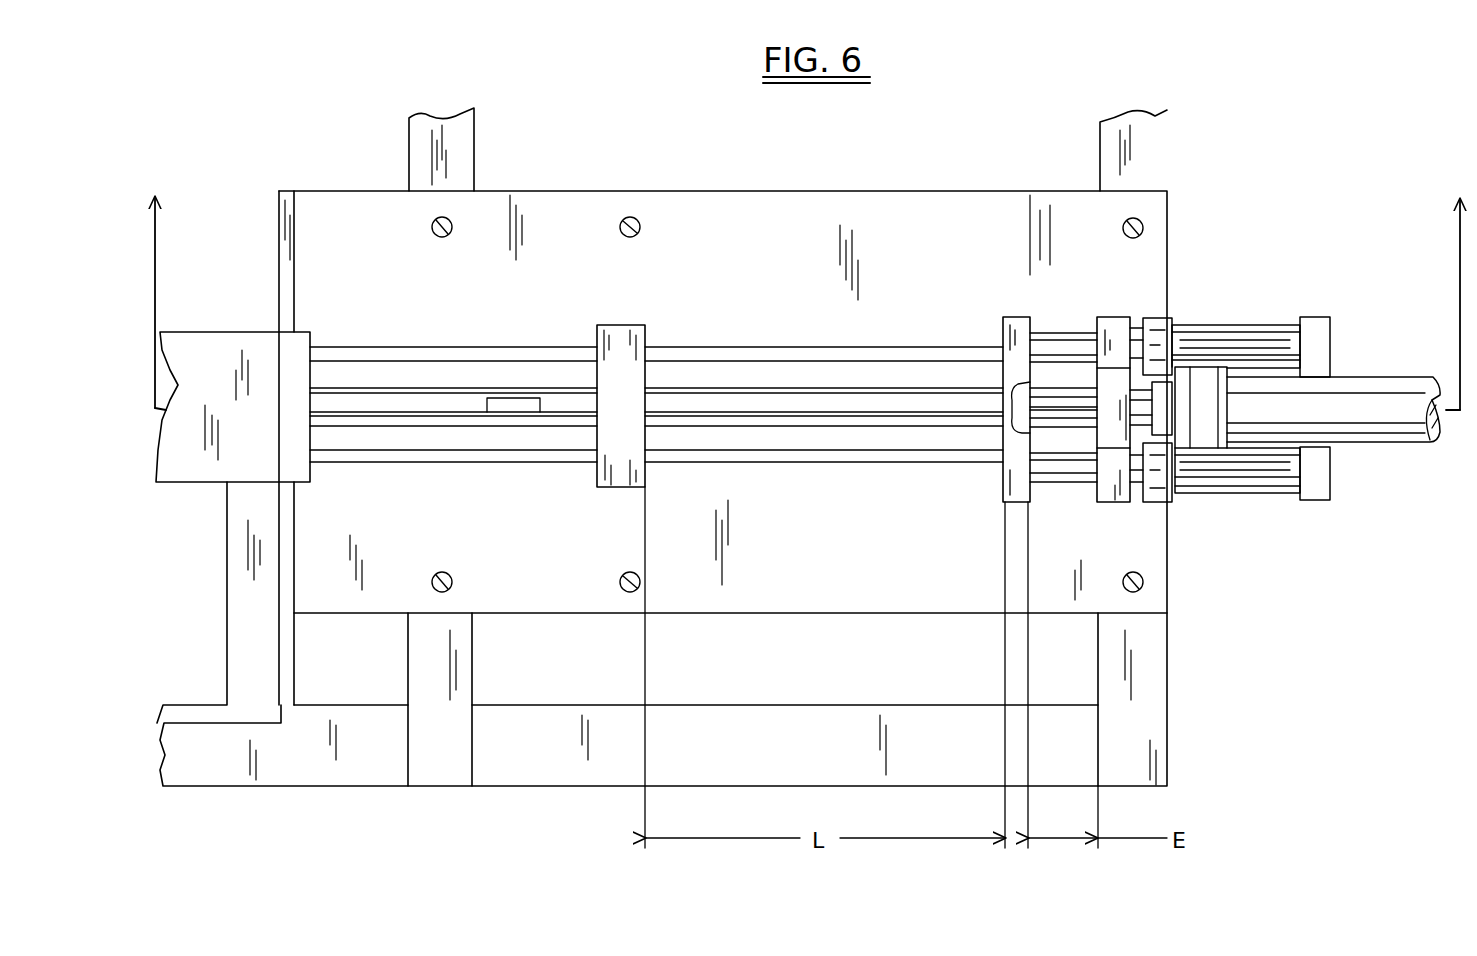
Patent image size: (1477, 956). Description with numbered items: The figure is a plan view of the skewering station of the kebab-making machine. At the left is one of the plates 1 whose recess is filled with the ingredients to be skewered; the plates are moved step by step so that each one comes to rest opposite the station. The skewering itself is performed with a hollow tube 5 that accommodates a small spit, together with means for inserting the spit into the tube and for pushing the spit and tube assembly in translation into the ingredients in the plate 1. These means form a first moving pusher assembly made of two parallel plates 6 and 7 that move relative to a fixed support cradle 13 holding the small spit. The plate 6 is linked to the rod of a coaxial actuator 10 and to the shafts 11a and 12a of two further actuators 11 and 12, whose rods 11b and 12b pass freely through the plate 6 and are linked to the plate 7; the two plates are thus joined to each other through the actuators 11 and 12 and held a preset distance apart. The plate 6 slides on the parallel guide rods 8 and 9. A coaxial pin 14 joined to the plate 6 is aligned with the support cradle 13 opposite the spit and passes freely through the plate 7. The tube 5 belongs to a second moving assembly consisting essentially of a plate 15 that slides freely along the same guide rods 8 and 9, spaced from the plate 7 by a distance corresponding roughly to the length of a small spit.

The plate 1 is at (194, 330).
The hollow tube 5 is at (485, 412).
The plate 6 is at (1106, 316).
The plate 7 is at (1210, 157).
The guide rod 8 is at (880, 358).
The guide rod 9 is at (948, 457).
The coaxial actuator 10 is at (1344, 449).
The actuator 11 is at (1290, 320).
The shaft 11a is at (1192, 337).
The rod 11b is at (1042, 345).
The actuator 12 is at (1290, 494).
The shaft 12a is at (1222, 472).
The rod 12b is at (1038, 473).
The fixed support cradle 13 is at (825, 418).
The coaxial pin 14 is at (1035, 407).
The plate 15 is at (630, 323).